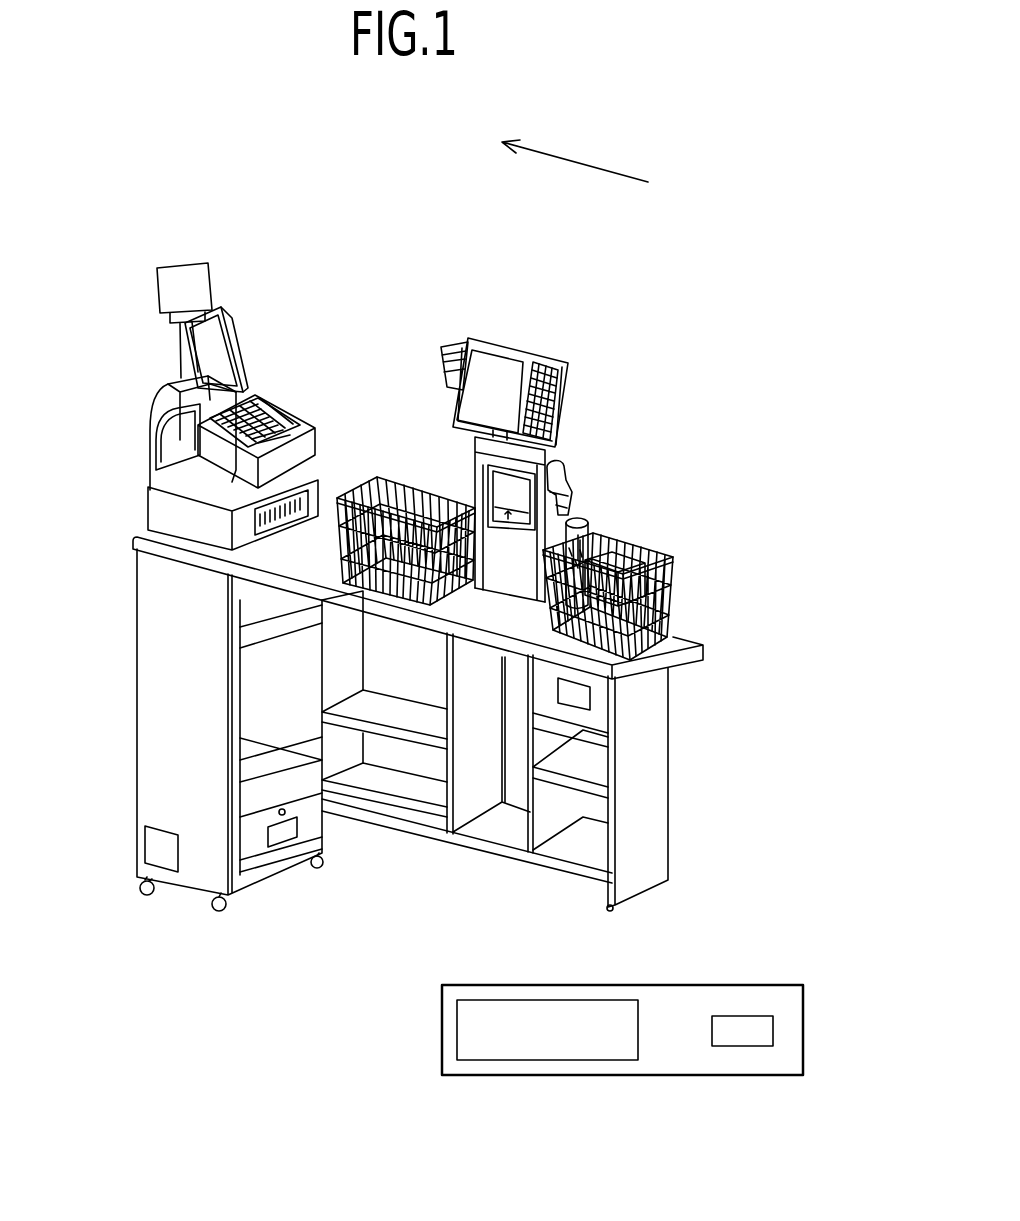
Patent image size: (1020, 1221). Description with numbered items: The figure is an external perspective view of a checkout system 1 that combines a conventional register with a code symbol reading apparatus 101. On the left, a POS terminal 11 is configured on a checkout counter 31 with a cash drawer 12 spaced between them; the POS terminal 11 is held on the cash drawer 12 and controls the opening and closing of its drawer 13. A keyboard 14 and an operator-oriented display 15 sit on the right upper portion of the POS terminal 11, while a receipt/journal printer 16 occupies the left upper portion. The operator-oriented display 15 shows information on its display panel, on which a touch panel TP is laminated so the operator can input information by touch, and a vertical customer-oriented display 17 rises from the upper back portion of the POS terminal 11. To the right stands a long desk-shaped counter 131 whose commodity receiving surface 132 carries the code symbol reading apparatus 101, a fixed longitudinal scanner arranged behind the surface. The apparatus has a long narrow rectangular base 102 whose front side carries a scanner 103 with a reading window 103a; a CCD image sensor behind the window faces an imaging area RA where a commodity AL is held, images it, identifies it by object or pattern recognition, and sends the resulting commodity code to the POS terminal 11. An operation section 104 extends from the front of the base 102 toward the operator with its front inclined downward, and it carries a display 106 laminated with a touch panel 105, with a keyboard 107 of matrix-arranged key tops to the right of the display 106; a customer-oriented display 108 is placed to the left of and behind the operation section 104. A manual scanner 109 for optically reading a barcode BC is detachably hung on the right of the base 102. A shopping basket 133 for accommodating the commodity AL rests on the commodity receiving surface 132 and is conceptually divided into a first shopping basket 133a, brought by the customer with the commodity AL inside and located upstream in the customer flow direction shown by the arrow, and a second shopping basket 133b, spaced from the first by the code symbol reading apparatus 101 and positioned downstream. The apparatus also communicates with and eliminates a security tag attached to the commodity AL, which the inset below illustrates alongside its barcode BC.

The checkout system 1 is at (101, 268).
The POS terminal 11 is at (117, 403).
The cash drawer 12 is at (158, 518).
The drawer 13 is at (318, 470).
The keyboard 14 is at (285, 405).
The operator-oriented display 15 is at (230, 342).
The receipt/journal printer 16 is at (155, 400).
The customer-oriented display 17 is at (170, 272).
The touch panel TP is at (230, 347).
The checkout counter 31 is at (157, 703).
The code symbol reading apparatus 101 is at (443, 210).
The base 102 is at (520, 563).
The scanner 103 is at (476, 492).
The reading window 103a is at (480, 490).
The operation section 104 is at (481, 340).
The touch panel 105 is at (505, 340).
The display 106 is at (530, 345).
The keyboard 107 is at (560, 345).
The customer-oriented display 108 is at (443, 347).
The manual scanner 109 is at (560, 458).
The counter 131 is at (658, 808).
The commodity receiving surface 132 is at (682, 645).
The shopping basket 133 is at (678, 530).
The first shopping basket 133a is at (687, 558).
The second shopping basket 133b is at (365, 477).
The commodity AL is at (577, 517).
The barcode BC is at (587, 527).
The imaging area RA is at (480, 553).